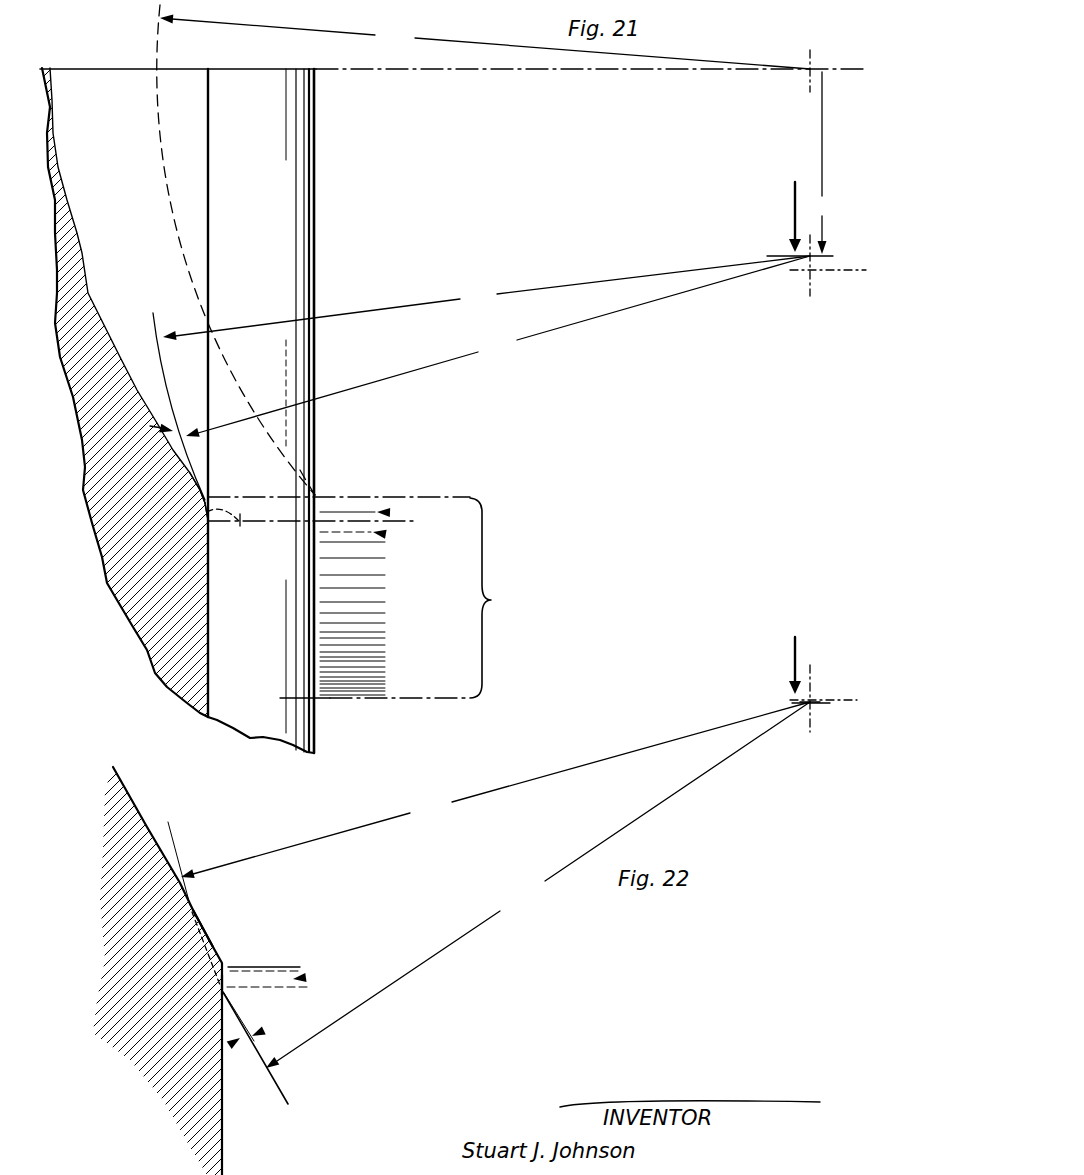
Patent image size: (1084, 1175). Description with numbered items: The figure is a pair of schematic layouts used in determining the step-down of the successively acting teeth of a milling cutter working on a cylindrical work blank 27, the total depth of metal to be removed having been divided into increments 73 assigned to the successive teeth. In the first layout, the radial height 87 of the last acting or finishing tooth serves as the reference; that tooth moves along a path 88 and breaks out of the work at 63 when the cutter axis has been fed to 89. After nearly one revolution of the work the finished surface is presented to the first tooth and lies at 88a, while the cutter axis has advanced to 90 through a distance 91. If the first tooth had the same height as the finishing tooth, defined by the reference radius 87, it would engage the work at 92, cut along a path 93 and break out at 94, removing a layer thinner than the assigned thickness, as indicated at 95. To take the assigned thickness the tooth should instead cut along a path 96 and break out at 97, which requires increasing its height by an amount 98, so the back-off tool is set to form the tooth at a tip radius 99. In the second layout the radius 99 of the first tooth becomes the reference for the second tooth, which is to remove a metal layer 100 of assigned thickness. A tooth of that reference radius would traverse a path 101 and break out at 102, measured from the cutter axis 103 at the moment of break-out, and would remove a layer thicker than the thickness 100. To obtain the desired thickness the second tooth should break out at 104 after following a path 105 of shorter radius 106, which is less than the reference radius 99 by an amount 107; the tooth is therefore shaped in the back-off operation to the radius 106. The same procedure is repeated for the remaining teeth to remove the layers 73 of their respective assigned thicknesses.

In FIG. 21, the cylindrical work blank 27 is at (300, 203).
In FIG. 22, the cylindrical work blank 27 is at (210, 1153).
In FIG. 21, the break-out point 63 is at (316, 495).
In FIG. 21, the increments of metal depth 73 is at (418, 598).
In FIG. 21, the radial height of finishing tooth 87 is at (485, 226).
In FIG. 21, the path of finishing tooth 88 is at (167, 177).
In FIG. 21, the displaced surface position 88a is at (80, 266).
In FIG. 21, the cutter axis position at break-out 89 is at (812, 68).
In FIG. 21, the advanced cutter axis position 90 is at (808, 255).
In FIG. 22, the advanced cutter axis position 90 is at (812, 700).
In FIG. 21, the axis advance distance 91 is at (826, 163).
In FIG. 21, the initial engagement point 92 is at (187, 481).
In FIG. 21, the cutting path at reference radius 93 is at (200, 498).
In FIG. 21, the break-out point at reference radius 94 is at (233, 531).
In FIG. 21, the lesser chip thickness 95 is at (389, 512).
In FIG. 21, the required cutting path 96 is at (207, 520).
In FIG. 22, the required cutting path 96 is at (213, 937).
In FIG. 21, the required break-out point 97 is at (203, 523).
In FIG. 21, the height increase 98 is at (173, 429).
In FIG. 21, the tip radius of first tooth 99 is at (481, 378).
In FIG. 22, the tip radius of first tooth 99 is at (538, 885).
In FIG. 21, the metal layer for second tooth 100 is at (386, 534).
In FIG. 22, the metal layer for second tooth 100 is at (306, 978).
In FIG. 22, the path at reference radius 101 is at (287, 1099).
In FIG. 22, the break-out point at reference radius 102 is at (221, 991).
In FIG. 22, the cutter axis at break-out 103 is at (812, 704).
In FIG. 22, the desired break-out point 104 is at (226, 992).
In FIG. 22, the desired cutting path 105 is at (207, 948).
In FIG. 22, the radius of second tooth 106 is at (489, 803).
In FIG. 22, the radius reduction amount 107 is at (263, 1032).